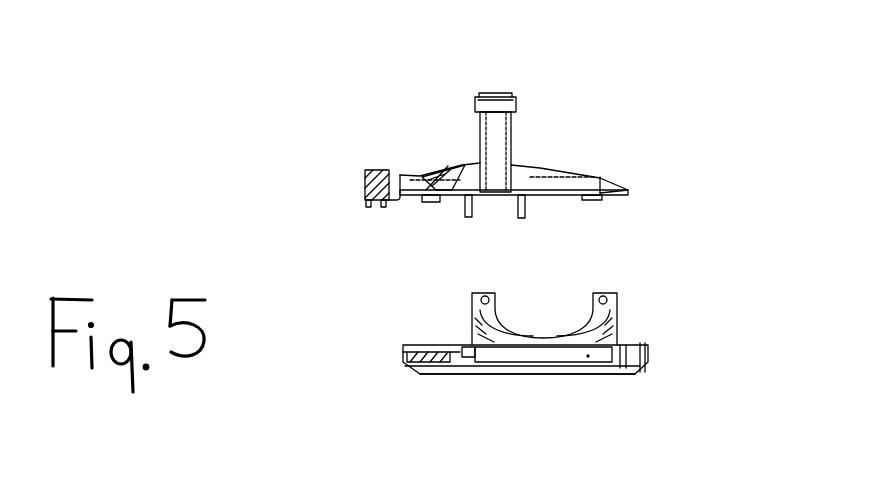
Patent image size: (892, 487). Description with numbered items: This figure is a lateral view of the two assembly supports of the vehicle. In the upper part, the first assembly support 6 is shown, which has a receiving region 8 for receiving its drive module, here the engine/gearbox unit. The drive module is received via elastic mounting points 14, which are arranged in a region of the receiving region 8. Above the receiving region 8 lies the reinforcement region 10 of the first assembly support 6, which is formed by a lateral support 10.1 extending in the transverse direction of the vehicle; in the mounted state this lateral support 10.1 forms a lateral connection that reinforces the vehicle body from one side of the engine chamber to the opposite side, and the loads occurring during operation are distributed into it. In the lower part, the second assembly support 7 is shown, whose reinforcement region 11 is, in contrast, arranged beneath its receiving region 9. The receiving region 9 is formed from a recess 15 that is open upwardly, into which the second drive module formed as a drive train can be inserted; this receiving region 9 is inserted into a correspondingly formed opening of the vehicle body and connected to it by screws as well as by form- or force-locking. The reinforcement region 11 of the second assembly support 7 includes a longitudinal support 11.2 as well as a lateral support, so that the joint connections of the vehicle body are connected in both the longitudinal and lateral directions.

The first assembly support 6 is at (380, 80).
The second assembly support 7 is at (363, 280).
The receiving region 8 is at (642, 192).
The receiving region 9 is at (653, 315).
The reinforcement region 10 is at (537, 103).
The lateral support 10.1 is at (502, 97).
The reinforcement region 11 is at (667, 358).
The longitudinal support 11.2 is at (543, 372).
The elastic mounting points 14 is at (375, 175).
The recess 15 is at (568, 308).